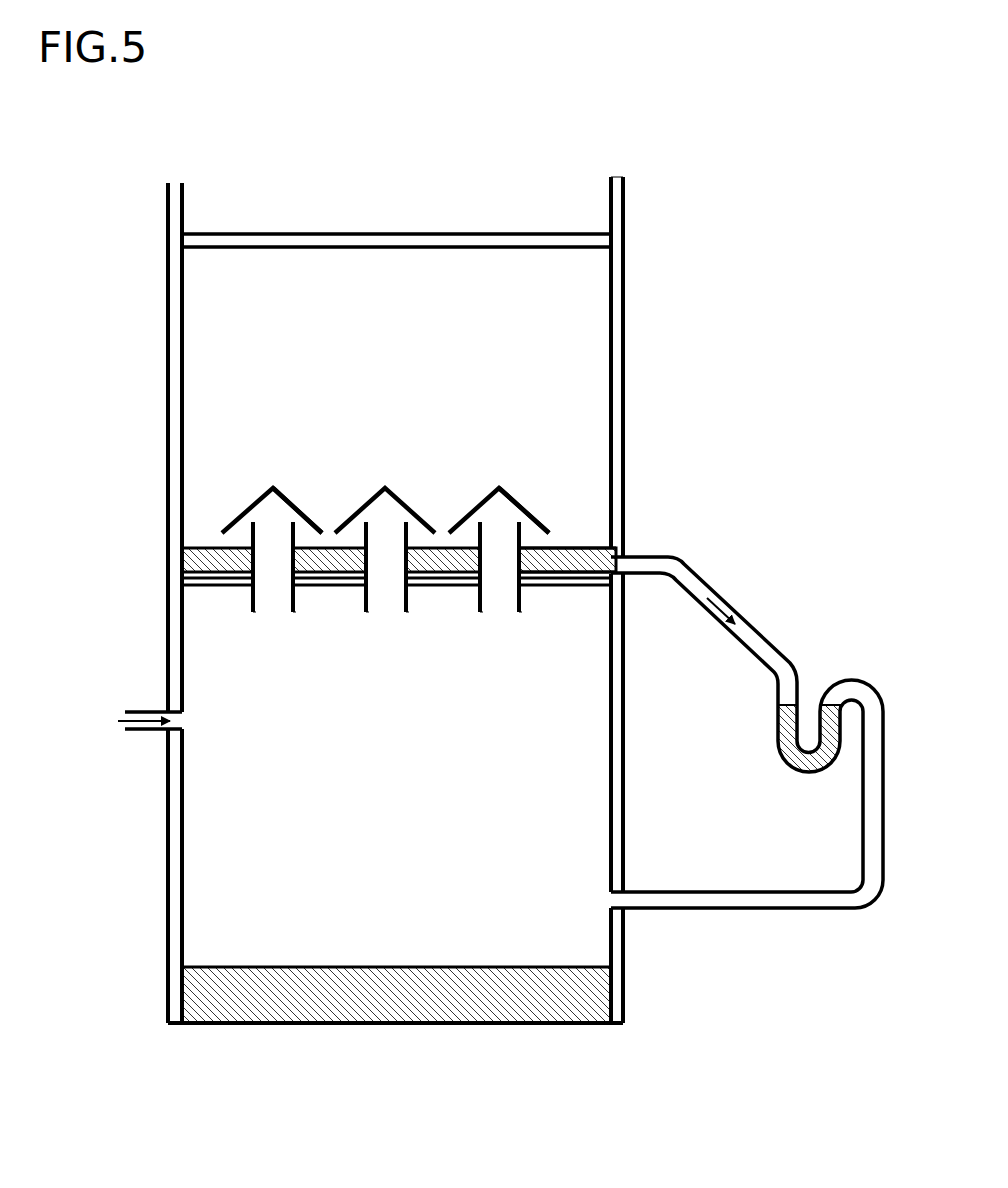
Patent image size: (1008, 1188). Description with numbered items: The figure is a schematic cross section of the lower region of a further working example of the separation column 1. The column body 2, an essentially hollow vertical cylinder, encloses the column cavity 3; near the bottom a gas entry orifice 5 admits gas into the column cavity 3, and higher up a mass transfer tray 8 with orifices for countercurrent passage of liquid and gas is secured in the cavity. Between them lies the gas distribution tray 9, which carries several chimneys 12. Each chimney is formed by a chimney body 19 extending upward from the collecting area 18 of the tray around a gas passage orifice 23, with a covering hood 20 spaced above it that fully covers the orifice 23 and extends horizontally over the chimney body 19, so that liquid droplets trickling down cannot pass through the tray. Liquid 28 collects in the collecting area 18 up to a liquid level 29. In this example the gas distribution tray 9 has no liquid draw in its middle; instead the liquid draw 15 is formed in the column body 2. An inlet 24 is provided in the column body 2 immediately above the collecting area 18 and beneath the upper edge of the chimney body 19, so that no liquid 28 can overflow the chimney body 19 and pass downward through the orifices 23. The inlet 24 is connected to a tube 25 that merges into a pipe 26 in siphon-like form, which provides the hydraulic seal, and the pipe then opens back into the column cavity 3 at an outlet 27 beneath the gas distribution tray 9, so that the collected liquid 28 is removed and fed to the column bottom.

The separation column 1 is at (618, 170).
The column body 2 is at (616, 222).
The column cavity 3 is at (396, 397).
The gas entry orifice 5 is at (140, 729).
The mass transfer tray 8 is at (338, 242).
The gas distribution tray 9 is at (188, 578).
The chimneys 12 is at (243, 508).
The liquid draw 15 is at (768, 606).
The collecting area 18 is at (582, 574).
The chimney body 19 is at (468, 521).
The covering hood 20 is at (290, 502).
The gas passage orifice 23 is at (270, 596).
The inlet 24 is at (620, 565).
The tube 25 is at (680, 556).
The pipe in siphon-like form 26 is at (758, 746).
The outlet 27 is at (620, 895).
The liquid 28 is at (630, 555).
The liquid level 29 is at (578, 548).